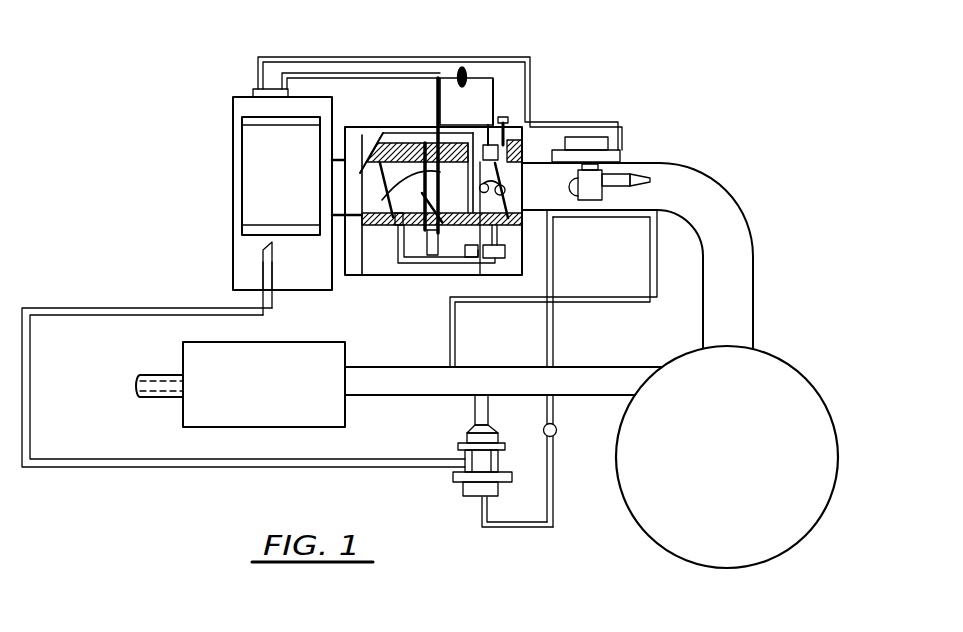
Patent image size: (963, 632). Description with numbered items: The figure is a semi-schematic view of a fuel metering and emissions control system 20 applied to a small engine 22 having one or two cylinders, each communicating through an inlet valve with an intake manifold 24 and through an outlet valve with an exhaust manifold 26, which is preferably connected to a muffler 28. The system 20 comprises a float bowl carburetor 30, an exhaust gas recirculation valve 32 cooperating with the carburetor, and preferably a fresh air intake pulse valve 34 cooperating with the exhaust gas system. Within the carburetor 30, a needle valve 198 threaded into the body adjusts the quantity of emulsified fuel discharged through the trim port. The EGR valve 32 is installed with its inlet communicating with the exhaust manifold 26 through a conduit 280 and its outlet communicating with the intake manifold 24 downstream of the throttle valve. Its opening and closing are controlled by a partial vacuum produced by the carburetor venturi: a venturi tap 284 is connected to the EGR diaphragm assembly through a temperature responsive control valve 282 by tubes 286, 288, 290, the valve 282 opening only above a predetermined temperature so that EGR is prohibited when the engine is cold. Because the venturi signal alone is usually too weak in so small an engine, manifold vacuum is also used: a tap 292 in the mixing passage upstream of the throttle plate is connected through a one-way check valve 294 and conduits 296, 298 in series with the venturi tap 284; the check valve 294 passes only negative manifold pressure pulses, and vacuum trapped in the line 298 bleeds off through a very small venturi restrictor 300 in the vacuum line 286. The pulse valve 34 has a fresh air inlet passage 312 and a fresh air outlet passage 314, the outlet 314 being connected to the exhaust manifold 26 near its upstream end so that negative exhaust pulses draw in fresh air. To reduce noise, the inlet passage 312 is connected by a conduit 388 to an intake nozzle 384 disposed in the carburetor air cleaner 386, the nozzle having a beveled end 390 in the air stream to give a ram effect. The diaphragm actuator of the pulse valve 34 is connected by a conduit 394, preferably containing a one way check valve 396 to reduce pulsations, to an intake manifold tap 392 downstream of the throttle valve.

The fuel metering and emissions control system 20 is at (214, 133).
The small engine 22 is at (645, 541).
The intake manifold 24 is at (755, 213).
The exhaust manifold 26 is at (566, 362).
The muffler 28 is at (278, 430).
The float bowl carburetor 30 is at (375, 139).
The exhaust gas recirculation (EGR) valve 32 is at (622, 148).
The fresh air intake pulse valve 34 is at (461, 497).
The needle valve 198 is at (505, 120).
The conduit 280 is at (650, 258).
The temperature responsive control valve 282 is at (253, 89).
The venturi tap 284 is at (394, 244).
The vacuum line 286 is at (436, 93).
The conduit 288 is at (361, 90).
The conduit 290 is at (312, 57).
The manifold vacuum tap 292 is at (470, 129).
The one-way check valve 294 is at (467, 76).
The conduit 296 is at (497, 88).
The vacuum line 298 is at (460, 66).
The venturi restrictor 300 is at (437, 113).
The fresh air inlet passage 312 is at (466, 461).
The fresh air outlet passage 314 is at (475, 419).
The intake nozzle 384 is at (262, 275).
The air cleaner 386 is at (233, 175).
The conduit 388 is at (222, 471).
The beveled end 390 is at (264, 243).
The intake manifold tap 392 is at (554, 220).
The conduit 394 is at (554, 488).
The one way check valve 396 is at (585, 414).